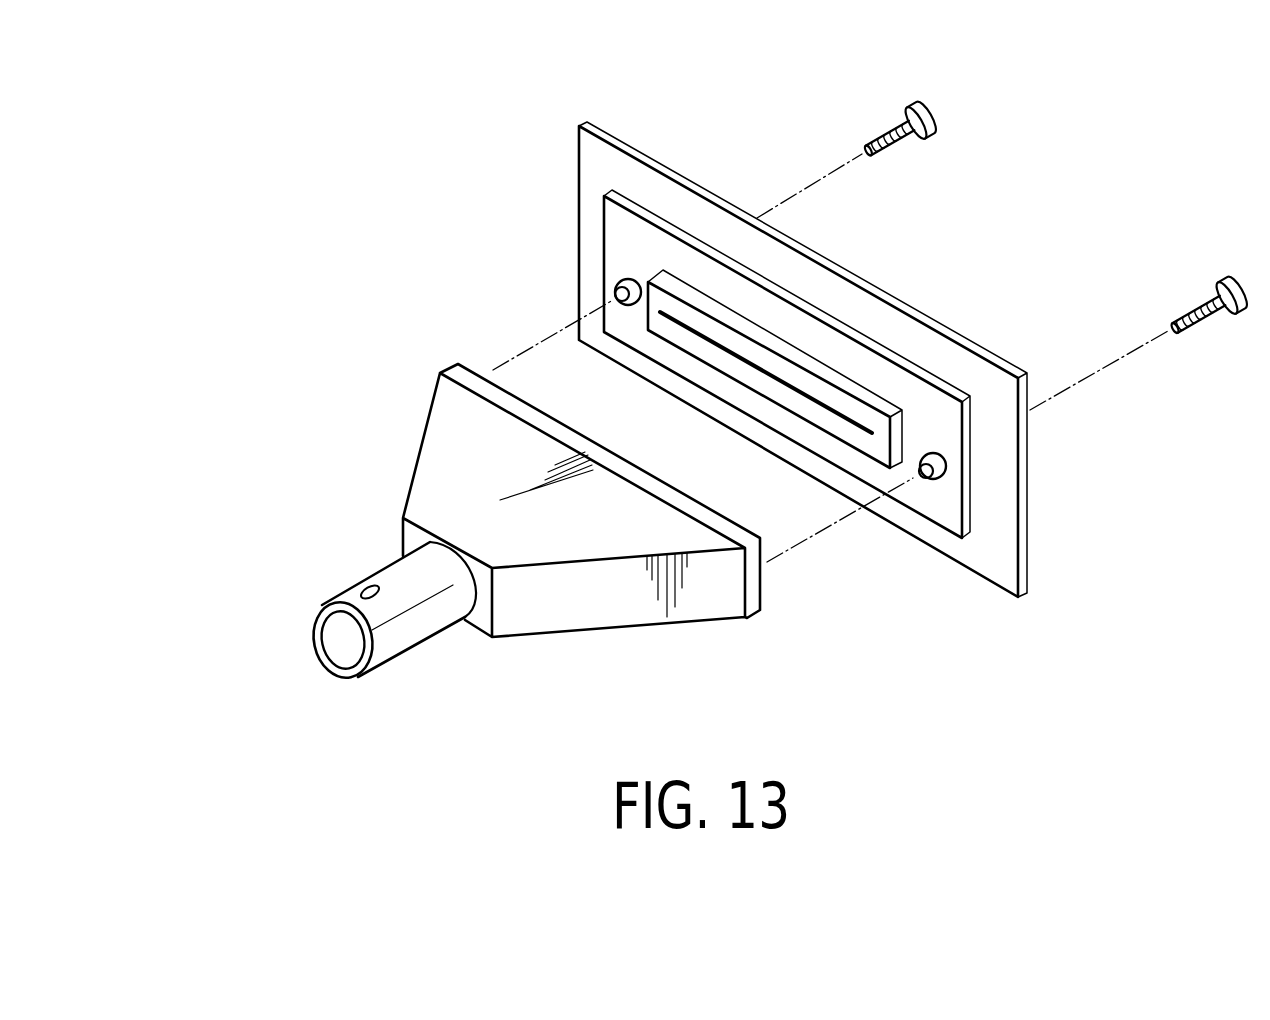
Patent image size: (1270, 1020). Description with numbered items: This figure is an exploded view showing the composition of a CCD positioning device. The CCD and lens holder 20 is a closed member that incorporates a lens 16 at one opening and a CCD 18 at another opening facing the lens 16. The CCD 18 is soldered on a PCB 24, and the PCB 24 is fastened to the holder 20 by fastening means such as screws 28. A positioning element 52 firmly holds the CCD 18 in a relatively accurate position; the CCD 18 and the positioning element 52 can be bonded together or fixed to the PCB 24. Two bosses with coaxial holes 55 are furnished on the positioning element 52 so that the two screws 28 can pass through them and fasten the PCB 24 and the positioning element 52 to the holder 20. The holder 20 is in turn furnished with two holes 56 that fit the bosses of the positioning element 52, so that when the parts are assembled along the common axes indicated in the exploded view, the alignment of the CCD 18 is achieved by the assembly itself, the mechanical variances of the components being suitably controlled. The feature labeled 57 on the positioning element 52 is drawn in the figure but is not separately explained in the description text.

The lens 16 is at (340, 635).
The CCD 18 is at (787, 345).
The CCD and lens holder 20 is at (539, 650).
The PCB 24 is at (1000, 514).
The screws 28 is at (925, 98).
The positioning element 52 is at (903, 383).
The coaxial holes 55 is at (921, 477).
The holes 56 is at (928, 478).
The slot 57 is at (797, 390).